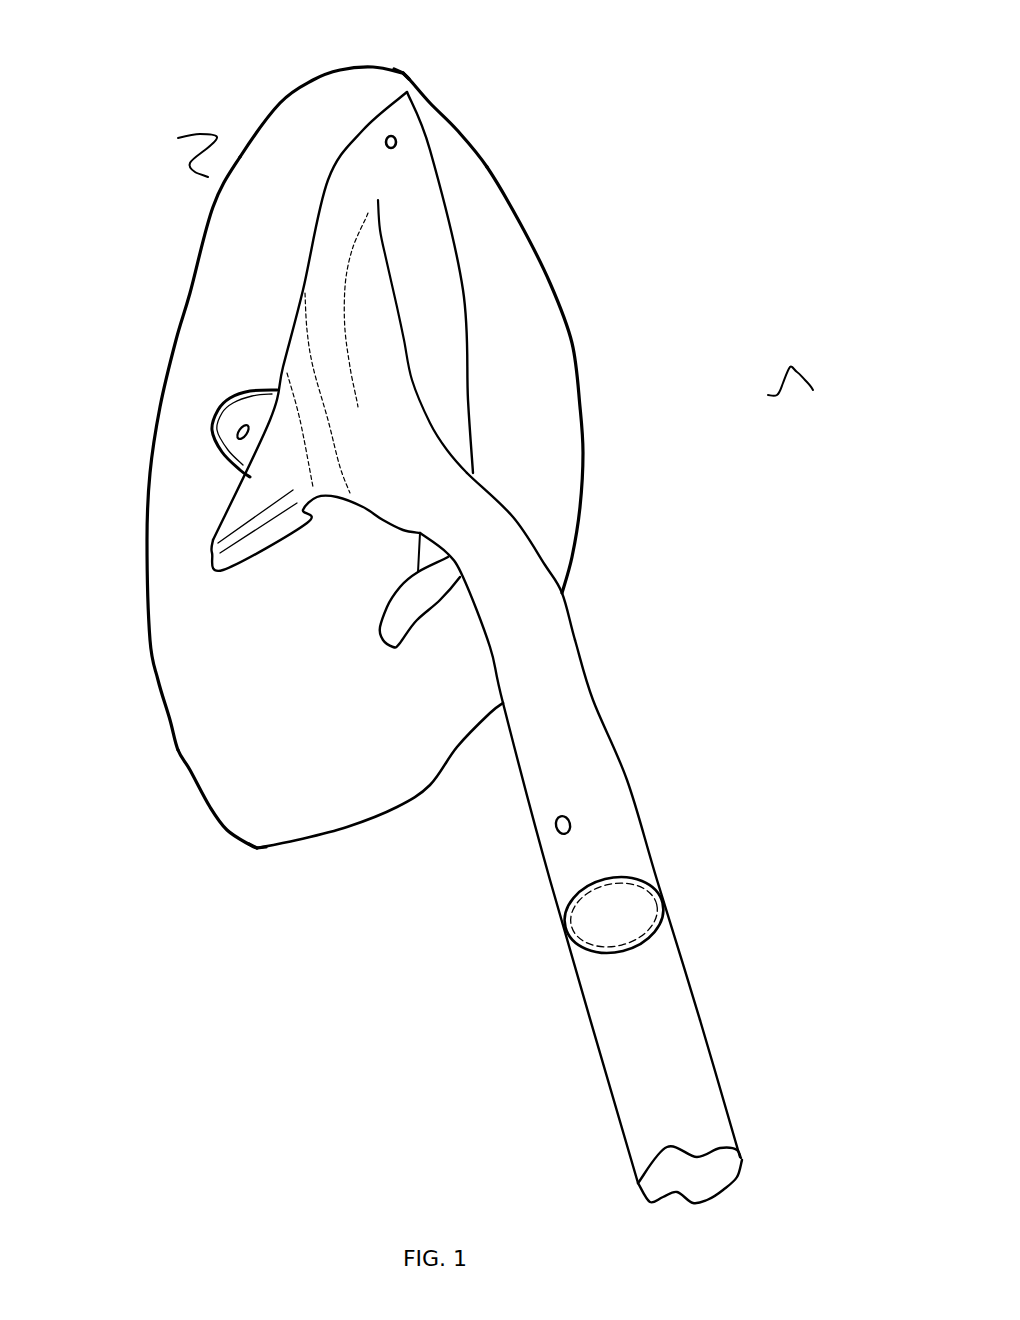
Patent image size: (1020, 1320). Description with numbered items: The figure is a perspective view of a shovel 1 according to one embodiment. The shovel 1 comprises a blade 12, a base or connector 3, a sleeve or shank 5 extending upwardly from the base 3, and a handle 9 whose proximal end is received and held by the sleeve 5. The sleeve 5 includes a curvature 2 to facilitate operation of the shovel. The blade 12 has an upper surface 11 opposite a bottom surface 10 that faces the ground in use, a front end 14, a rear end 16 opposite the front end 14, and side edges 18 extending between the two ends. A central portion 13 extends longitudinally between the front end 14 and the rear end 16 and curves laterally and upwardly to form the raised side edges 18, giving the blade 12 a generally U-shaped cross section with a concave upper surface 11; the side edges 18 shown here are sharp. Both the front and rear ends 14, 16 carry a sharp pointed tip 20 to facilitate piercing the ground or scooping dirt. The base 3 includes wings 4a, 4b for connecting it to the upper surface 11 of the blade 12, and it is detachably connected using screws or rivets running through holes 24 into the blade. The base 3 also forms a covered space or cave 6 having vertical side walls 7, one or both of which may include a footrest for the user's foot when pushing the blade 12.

The shovel 1 is at (800, 381).
The curvature 2 is at (518, 517).
The base or connector 3 is at (430, 316).
The wing 4a is at (433, 160).
The wing 4b is at (230, 400).
The sleeve or shank 5 is at (593, 700).
The covered space or cave 6 is at (337, 520).
The vertical side wall 7 is at (400, 622).
The handle 9 is at (720, 1080).
The bottom surface 10 is at (358, 477).
The upper surface 11 is at (520, 352).
The blade 12 is at (173, 149).
The central portion 13 is at (270, 318).
The front end 14 is at (340, 66).
The rear end 16 is at (210, 807).
The side edges 18 is at (148, 481).
The sharp pointed tip 20 is at (407, 73).
The holes 24 is at (400, 141).